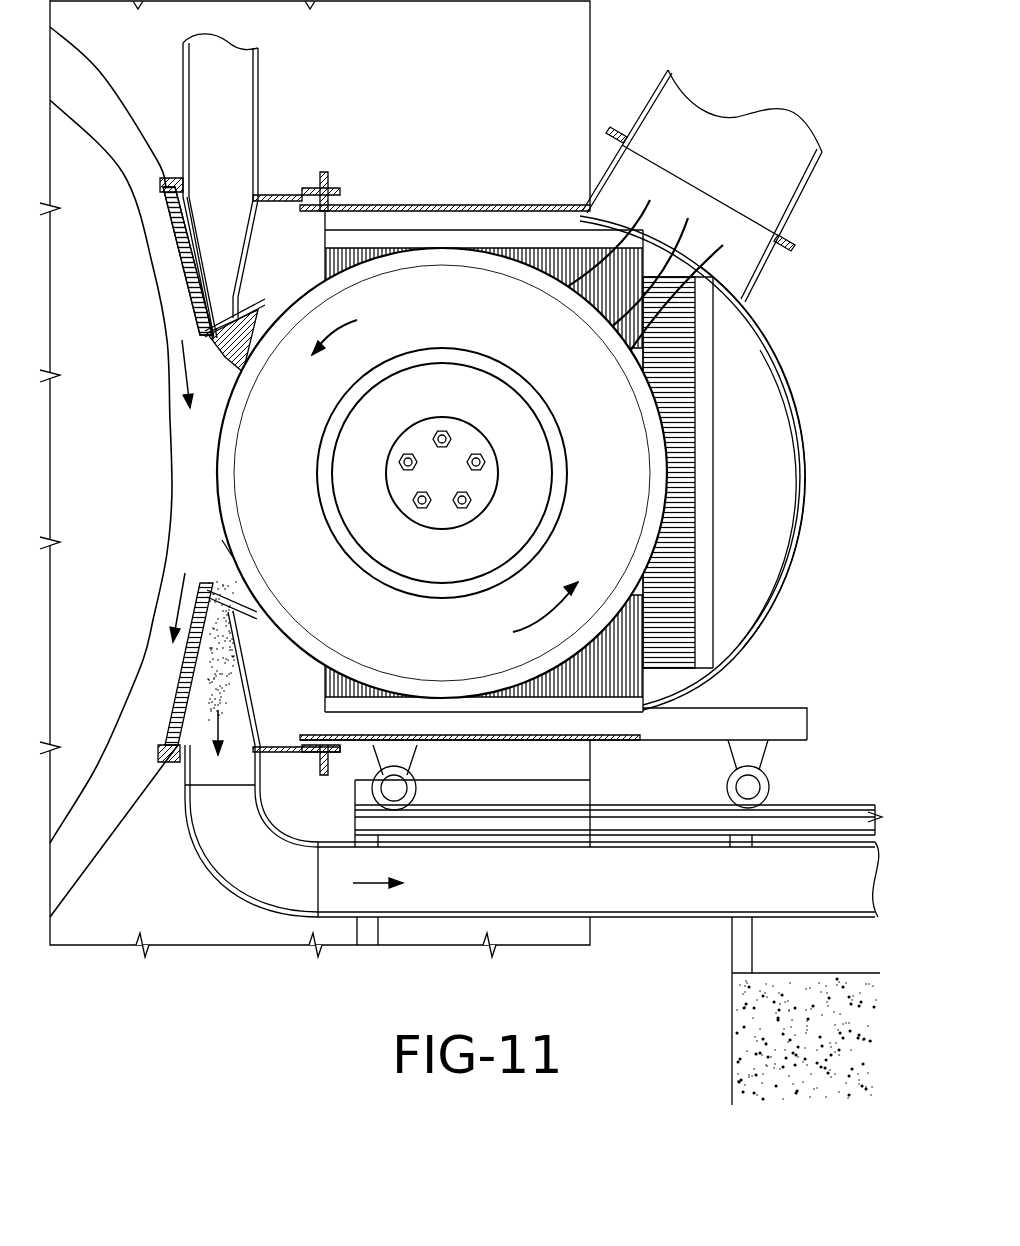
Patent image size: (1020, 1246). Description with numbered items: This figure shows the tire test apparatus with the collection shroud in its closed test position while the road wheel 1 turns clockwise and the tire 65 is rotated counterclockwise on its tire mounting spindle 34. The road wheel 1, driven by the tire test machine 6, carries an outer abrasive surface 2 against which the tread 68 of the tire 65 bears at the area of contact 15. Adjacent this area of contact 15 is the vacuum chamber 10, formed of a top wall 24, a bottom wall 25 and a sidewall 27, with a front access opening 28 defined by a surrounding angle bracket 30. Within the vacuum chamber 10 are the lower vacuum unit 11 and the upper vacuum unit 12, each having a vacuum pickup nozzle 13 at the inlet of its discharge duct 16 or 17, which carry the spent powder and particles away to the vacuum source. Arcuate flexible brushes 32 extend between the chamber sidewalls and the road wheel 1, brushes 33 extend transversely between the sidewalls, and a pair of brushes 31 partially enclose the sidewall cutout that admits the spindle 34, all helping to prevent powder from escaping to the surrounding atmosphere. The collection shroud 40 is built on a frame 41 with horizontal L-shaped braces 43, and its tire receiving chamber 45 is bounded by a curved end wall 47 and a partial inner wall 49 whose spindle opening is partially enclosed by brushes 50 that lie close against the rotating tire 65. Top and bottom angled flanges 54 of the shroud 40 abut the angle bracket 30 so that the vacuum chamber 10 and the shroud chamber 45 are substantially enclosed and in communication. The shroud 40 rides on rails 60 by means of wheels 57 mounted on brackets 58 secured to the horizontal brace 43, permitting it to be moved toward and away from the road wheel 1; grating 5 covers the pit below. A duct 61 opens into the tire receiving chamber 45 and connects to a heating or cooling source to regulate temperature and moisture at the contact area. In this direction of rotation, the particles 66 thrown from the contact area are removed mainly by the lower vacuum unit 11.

The road wheel 1 is at (105, 838).
The abrasive surface 2 is at (215, 414).
The grating 5 is at (608, 820).
The tire test machine 6 is at (592, 30).
The vacuum chamber 10 is at (178, 705).
The lower vacuum unit 11 is at (208, 672).
The upper vacuum unit 12 is at (195, 270).
The vacuum pickup nozzle 13 is at (215, 322).
The area of contact 15 is at (213, 465).
The discharge duct 16 is at (250, 876).
The discharge duct 17 is at (258, 88).
The top wall 24 is at (284, 196).
The bottom wall 25 is at (288, 753).
The sidewall 27 is at (295, 626).
The front access opening 28 is at (284, 252).
The angle bracket 30 is at (320, 186).
The brushes 31 is at (237, 367).
The arcuate-shaped flexible brushes 32 is at (173, 233).
The brushes 33 is at (172, 180).
The tire mounting spindle 34 is at (442, 517).
The collection shroud 40 is at (480, 205).
The frame 41 is at (753, 707).
The horizontal L-shaped brace 43 is at (795, 718).
The tire receiving chamber 45 is at (737, 567).
The curved end wall 47 is at (788, 368).
The partial inner wall 49 is at (757, 529).
The brushes 50 is at (562, 263).
The top and bottom angled flanges 54 is at (328, 187).
The wheels 57 is at (418, 789).
The brackets 58 is at (405, 762).
The rails 60 is at (863, 804).
The duct 61 is at (790, 128).
The tire 65 is at (433, 262).
The particles 66 is at (227, 684).
The tread 68 is at (230, 547).